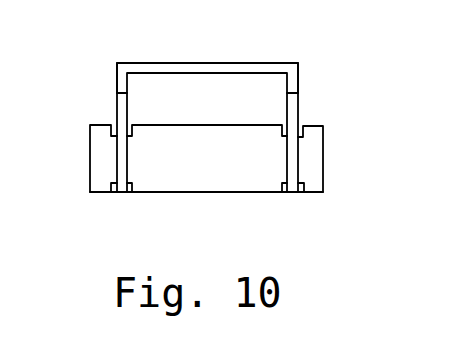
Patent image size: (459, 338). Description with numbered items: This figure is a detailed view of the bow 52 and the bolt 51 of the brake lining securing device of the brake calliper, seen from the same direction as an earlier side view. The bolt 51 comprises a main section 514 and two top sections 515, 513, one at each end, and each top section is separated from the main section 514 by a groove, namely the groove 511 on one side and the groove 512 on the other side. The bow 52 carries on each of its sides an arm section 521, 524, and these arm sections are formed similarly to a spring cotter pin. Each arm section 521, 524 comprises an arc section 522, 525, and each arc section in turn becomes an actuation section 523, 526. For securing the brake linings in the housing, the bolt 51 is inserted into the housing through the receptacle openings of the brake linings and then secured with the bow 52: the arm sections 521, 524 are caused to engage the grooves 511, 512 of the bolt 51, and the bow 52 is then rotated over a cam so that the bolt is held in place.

The bolt 51 is at (238, 142).
The bow 52 is at (180, 68).
The groove 511 is at (93, 193).
The groove 512 is at (308, 193).
The top section 513 is at (313, 162).
The main section 514 is at (212, 180).
The top section 515 is at (105, 160).
The arm section 521 is at (117, 79).
The arc section 522 is at (115, 193).
The actuation section 523 is at (117, 105).
The arm section 524 is at (298, 78).
The arc section 525 is at (293, 193).
The actuation section 526 is at (298, 108).